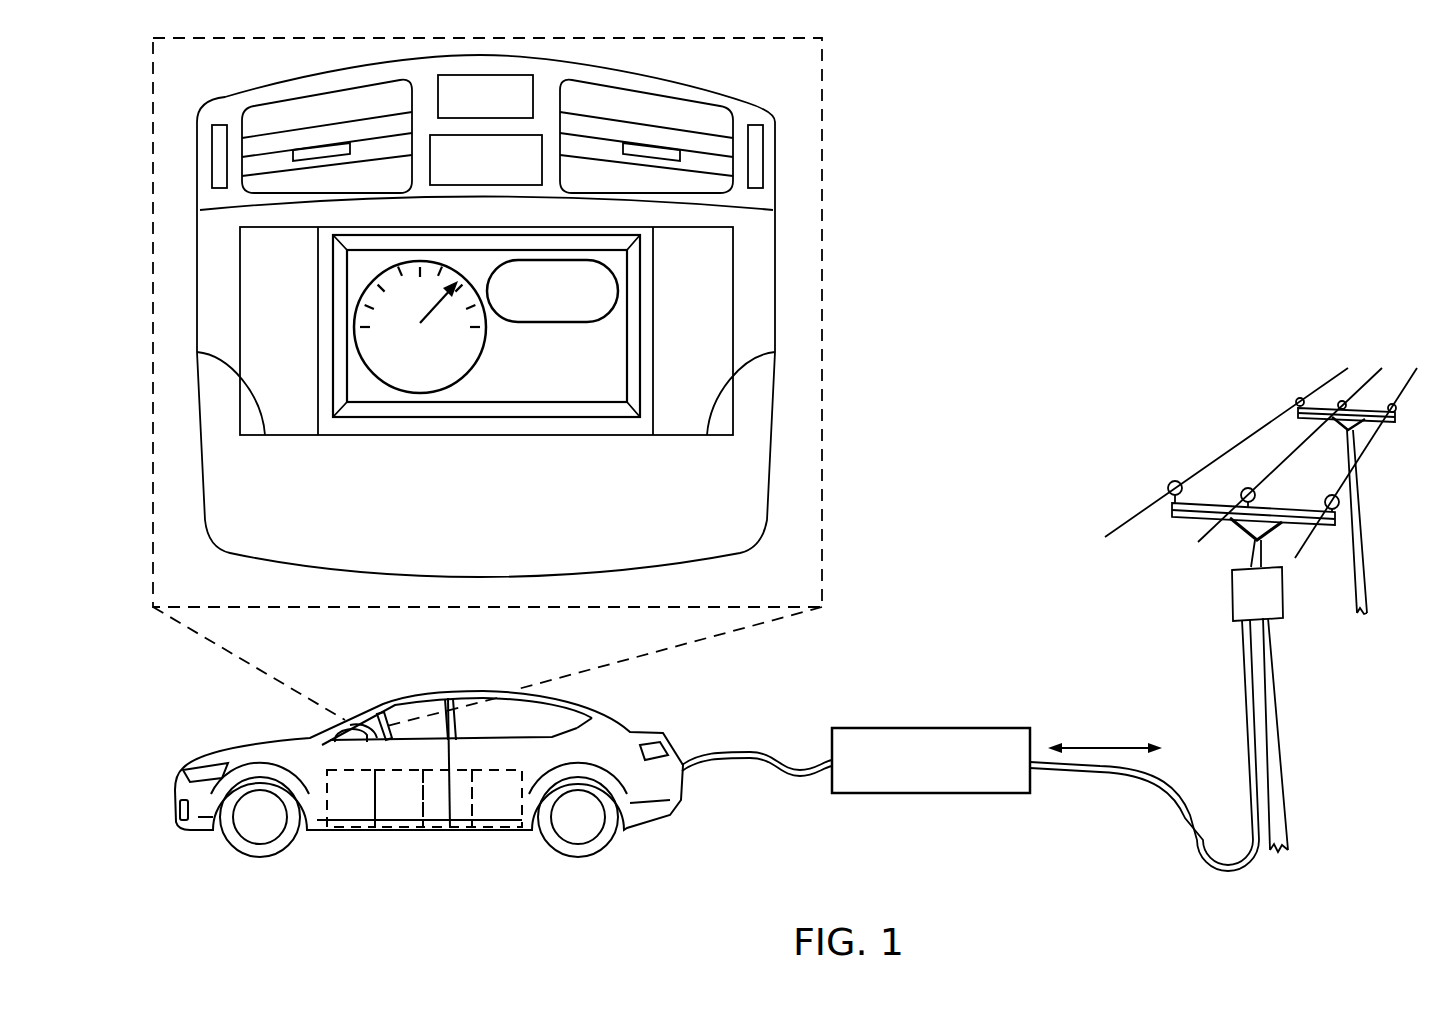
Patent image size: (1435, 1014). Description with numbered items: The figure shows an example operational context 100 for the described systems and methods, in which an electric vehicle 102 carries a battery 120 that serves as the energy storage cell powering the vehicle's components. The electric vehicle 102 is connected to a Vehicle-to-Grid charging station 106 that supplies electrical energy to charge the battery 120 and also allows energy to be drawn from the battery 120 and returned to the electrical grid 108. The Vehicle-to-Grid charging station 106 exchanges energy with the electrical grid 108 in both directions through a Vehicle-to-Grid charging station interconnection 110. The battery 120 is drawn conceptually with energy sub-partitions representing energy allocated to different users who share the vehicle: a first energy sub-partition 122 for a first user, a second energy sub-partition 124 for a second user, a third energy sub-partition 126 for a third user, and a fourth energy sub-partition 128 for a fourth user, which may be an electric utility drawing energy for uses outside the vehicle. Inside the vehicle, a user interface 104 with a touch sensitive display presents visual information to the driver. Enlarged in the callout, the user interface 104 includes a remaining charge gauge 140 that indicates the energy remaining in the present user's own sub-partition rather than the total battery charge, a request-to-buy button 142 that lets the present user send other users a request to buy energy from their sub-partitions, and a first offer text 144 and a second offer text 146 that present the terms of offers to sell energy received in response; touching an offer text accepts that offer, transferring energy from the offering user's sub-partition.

The operational context 100 is at (1304, 135).
The electric vehicle 102 is at (212, 863).
The user interface 104 is at (775, 172).
The Vehicle-to-Grid charging station 106 is at (932, 727).
The electrical grid 108 is at (1188, 420).
The Vehicle-to-Grid charging station interconnection 110 is at (1102, 771).
The battery 120 is at (545, 753).
The first energy sub-partition 122 is at (351, 829).
The second energy sub-partition 124 is at (399, 829).
The third energy sub-partition 126 is at (447, 829).
The fourth energy sub-partition 128 is at (497, 829).
The remaining charge gauge 140 is at (354, 327).
The "REQUEST TO BUY" button 142 is at (618, 292).
The "OFFER 1" text 144 is at (588, 343).
The "OFFER 2" text 146 is at (588, 378).